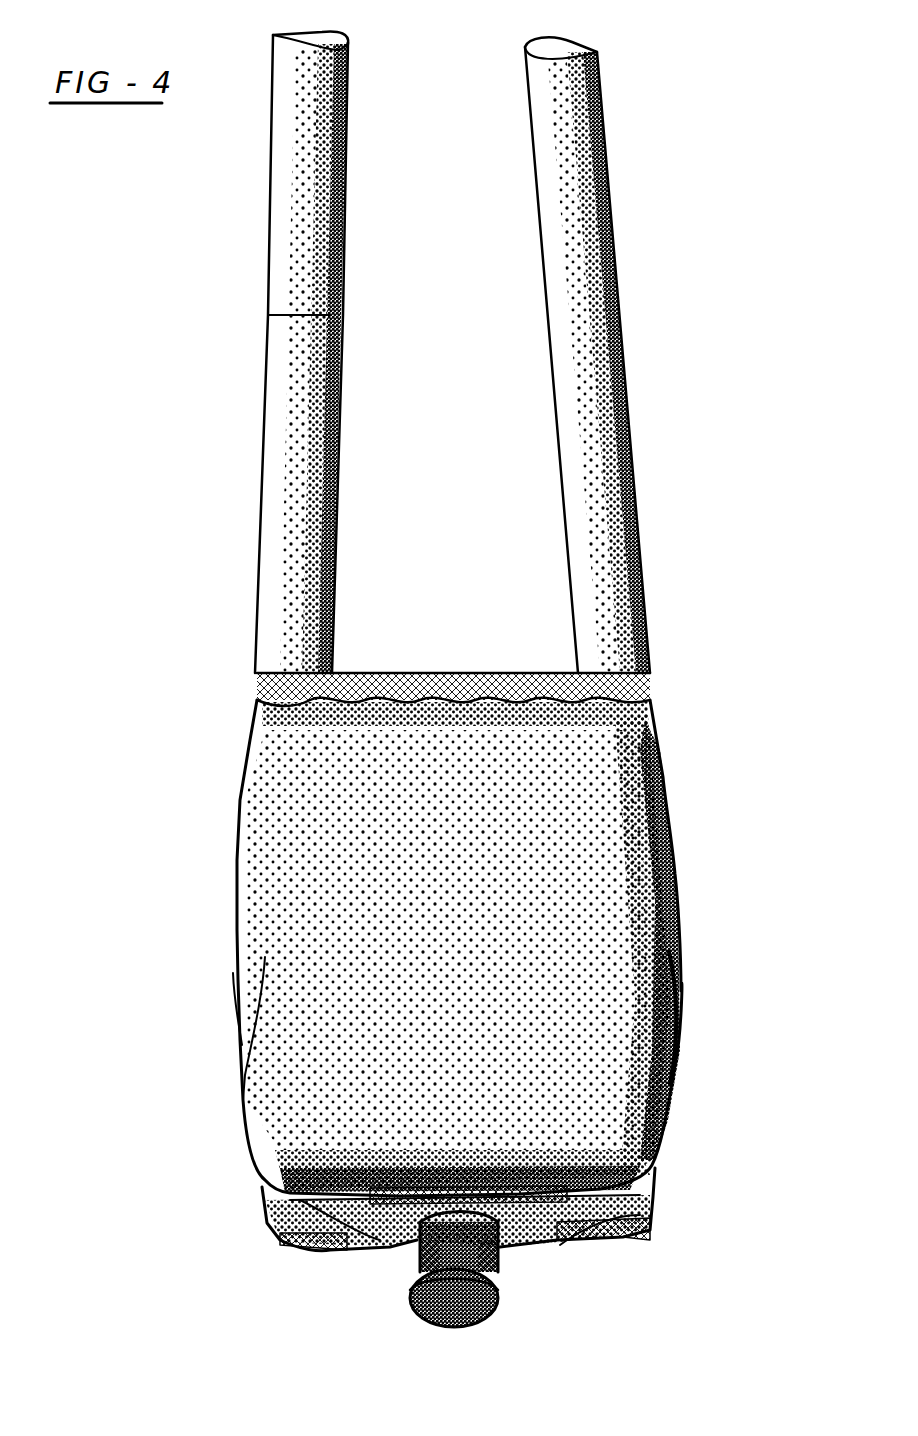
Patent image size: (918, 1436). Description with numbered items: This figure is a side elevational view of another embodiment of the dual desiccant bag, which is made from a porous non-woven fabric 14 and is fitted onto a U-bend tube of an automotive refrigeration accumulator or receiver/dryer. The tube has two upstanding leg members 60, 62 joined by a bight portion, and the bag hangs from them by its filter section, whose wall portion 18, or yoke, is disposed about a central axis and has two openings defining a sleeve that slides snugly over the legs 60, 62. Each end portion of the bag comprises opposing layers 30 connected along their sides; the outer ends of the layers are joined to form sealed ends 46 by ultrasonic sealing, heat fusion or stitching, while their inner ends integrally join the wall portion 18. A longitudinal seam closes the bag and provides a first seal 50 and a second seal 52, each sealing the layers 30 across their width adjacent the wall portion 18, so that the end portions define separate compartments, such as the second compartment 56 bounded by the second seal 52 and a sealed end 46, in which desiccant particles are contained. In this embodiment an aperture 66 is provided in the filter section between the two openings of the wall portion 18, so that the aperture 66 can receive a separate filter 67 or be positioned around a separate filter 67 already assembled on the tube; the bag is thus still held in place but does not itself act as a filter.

The porous fabric 14 is at (653, 1125).
The wall portion 18 is at (582, 1240).
The top layer 30 is at (642, 870).
The sealed ends 46 is at (458, 675).
The first seal 50 is at (282, 1248).
The second seal 52 is at (375, 1197).
The second compartment 56 is at (441, 821).
The upstanding leg member 60 is at (277, 492).
The upstanding leg member 62 is at (636, 481).
The aperture 66 is at (412, 1238).
The separate filter 67 is at (497, 1297).